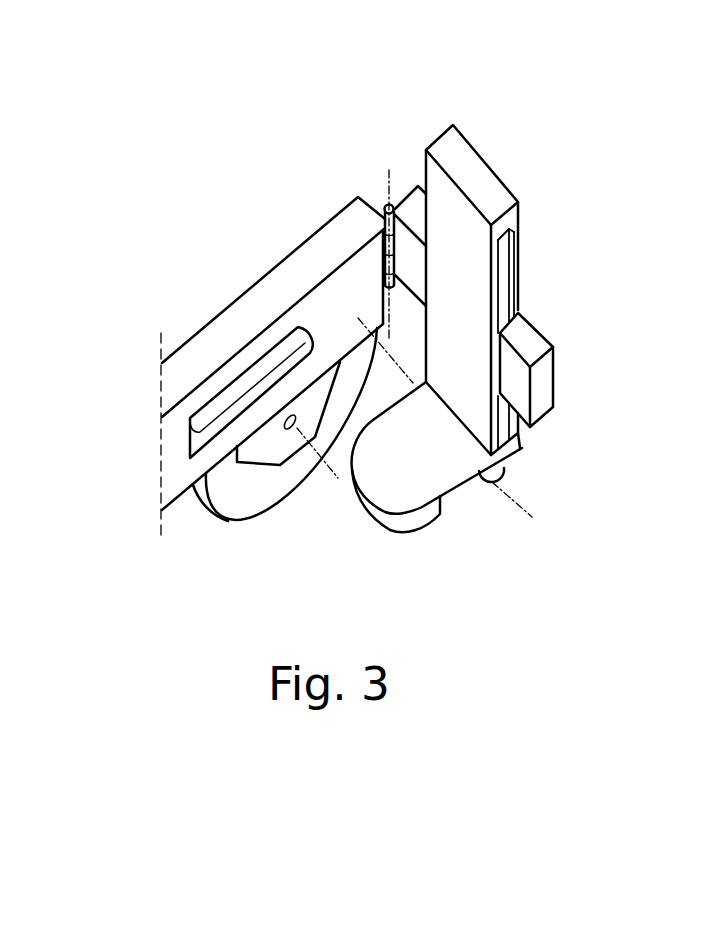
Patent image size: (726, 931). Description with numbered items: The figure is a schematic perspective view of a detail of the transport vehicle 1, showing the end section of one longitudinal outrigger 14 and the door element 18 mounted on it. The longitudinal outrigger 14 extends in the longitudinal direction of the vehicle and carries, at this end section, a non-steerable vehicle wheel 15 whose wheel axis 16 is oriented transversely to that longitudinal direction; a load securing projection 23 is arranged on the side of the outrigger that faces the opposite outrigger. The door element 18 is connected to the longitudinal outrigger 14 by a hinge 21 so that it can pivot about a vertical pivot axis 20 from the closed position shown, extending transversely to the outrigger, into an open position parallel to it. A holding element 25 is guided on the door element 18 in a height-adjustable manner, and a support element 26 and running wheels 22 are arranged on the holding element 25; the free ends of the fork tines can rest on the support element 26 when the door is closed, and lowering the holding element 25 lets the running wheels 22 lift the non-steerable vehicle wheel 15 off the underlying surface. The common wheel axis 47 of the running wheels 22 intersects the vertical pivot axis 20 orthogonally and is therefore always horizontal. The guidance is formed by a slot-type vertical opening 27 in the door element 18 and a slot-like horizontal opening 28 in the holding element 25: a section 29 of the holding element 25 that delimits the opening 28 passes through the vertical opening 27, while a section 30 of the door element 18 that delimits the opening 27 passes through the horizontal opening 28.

The transport vehicle 1 is at (338, 110).
The longitudinal outrigger 14 is at (197, 353).
The non-steerable vehicle wheel 15 is at (244, 497).
The wheel axis 16 is at (314, 448).
The door element 18 is at (556, 382).
The vertical pivot axis 20 is at (388, 187).
The hinge 21 is at (384, 240).
The running wheel 22 is at (492, 488).
The load securing projection 23 is at (262, 370).
The holding element 25 is at (494, 146).
The support element 26 is at (418, 494).
The vertical opening 27 is at (522, 317).
The horizontal opening 28 is at (520, 255).
The section of the holding element 29 is at (520, 278).
The section of the door element 30 is at (503, 332).
The wheel axis 47 is at (533, 518).